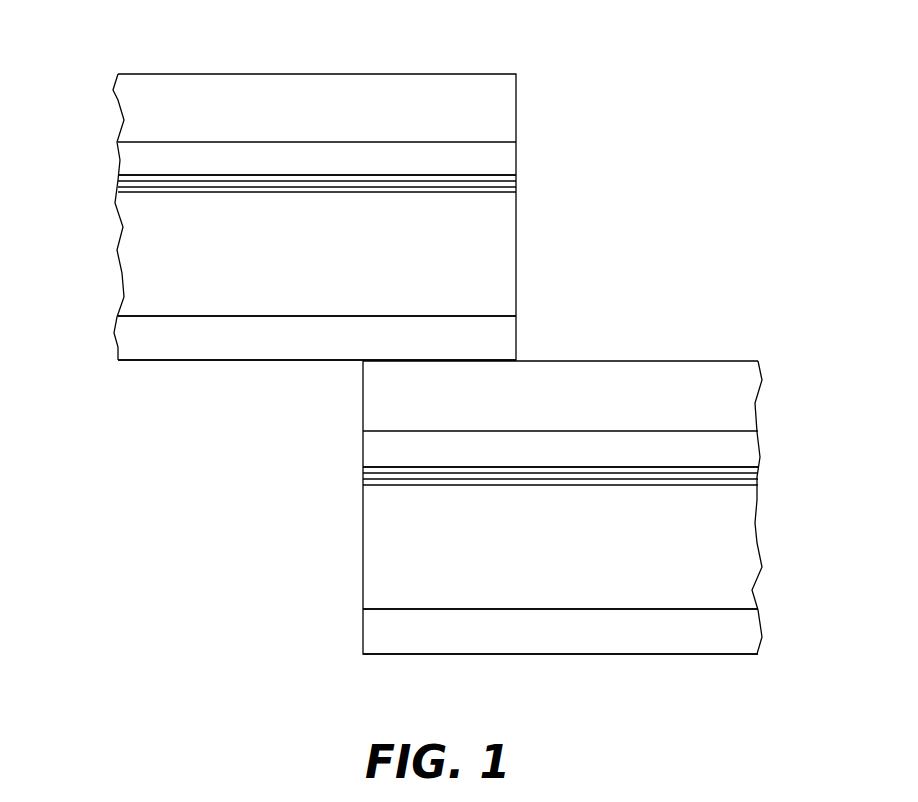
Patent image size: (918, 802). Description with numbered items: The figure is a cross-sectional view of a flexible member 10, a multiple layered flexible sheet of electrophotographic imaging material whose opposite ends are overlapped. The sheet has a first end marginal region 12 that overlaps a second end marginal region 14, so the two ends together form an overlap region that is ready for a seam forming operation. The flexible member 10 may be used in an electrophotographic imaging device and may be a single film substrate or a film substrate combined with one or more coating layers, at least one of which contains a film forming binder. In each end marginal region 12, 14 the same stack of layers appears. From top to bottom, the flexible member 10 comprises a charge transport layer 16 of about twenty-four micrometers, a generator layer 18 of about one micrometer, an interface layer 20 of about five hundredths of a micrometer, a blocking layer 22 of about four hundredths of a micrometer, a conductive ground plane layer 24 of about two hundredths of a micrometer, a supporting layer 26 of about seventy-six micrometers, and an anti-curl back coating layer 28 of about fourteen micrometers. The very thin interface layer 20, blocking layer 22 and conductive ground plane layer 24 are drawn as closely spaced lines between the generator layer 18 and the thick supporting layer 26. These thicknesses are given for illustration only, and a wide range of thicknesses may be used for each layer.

The flexible member 10 is at (611, 128).
The first end marginal region 12 is at (435, 60).
The second end marginal region 14 is at (525, 662).
The charge transport layer 16 is at (128, 100).
The generator layer 18 is at (128, 149).
The interface layer 20 is at (120, 176).
The blocking layer 22 is at (120, 184).
The conductive ground plane layer 24 is at (120, 192).
The supporting layer 26 is at (128, 255).
The anti-curl back coating layer 28 is at (128, 330).